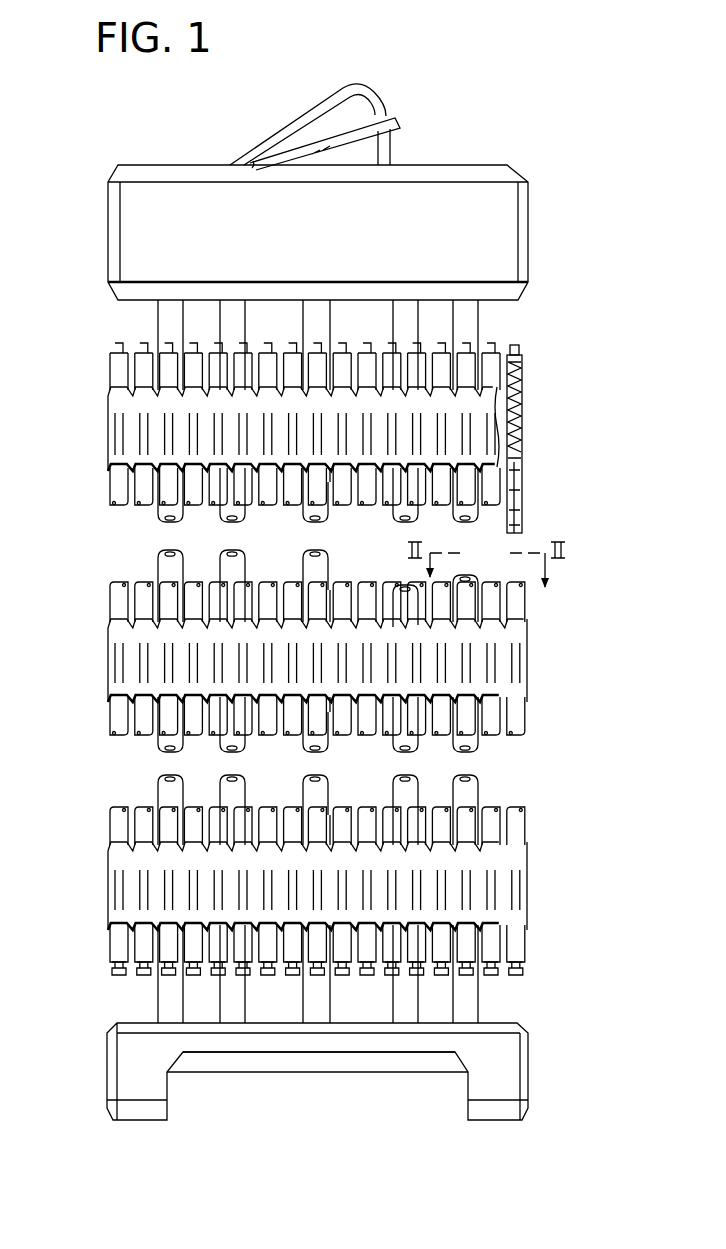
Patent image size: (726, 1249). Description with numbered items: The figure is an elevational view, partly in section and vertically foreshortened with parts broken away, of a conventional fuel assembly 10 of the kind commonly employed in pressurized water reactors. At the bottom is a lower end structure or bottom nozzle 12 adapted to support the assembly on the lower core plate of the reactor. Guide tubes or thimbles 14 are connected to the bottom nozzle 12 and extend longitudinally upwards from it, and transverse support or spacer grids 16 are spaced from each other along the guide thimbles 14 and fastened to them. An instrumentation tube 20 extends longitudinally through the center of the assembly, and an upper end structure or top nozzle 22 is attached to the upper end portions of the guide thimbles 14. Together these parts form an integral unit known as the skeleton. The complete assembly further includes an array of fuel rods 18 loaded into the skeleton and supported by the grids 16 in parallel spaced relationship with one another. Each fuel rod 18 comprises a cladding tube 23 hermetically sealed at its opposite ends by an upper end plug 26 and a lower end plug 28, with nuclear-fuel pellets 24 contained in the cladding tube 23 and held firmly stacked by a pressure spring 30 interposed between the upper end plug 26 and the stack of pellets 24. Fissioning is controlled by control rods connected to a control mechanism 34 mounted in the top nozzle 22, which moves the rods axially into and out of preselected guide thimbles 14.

The fuel assembly 10 is at (90, 336).
The bottom nozzle 12 is at (526, 1062).
The guide thimbles 14 is at (490, 320).
The spacer grids 16 is at (125, 432).
The fuel rods 18 is at (322, 659).
The instrumentation tube 20 is at (310, 1012).
The top nozzle 22 is at (532, 198).
The cladding tube 23 is at (526, 613).
The nuclear-fuel pellets 24 is at (523, 505).
The upper end plug 26 is at (519, 348).
The lower end plug 28 is at (522, 972).
The pressure spring 30 is at (520, 410).
The control mechanism 34 is at (405, 150).